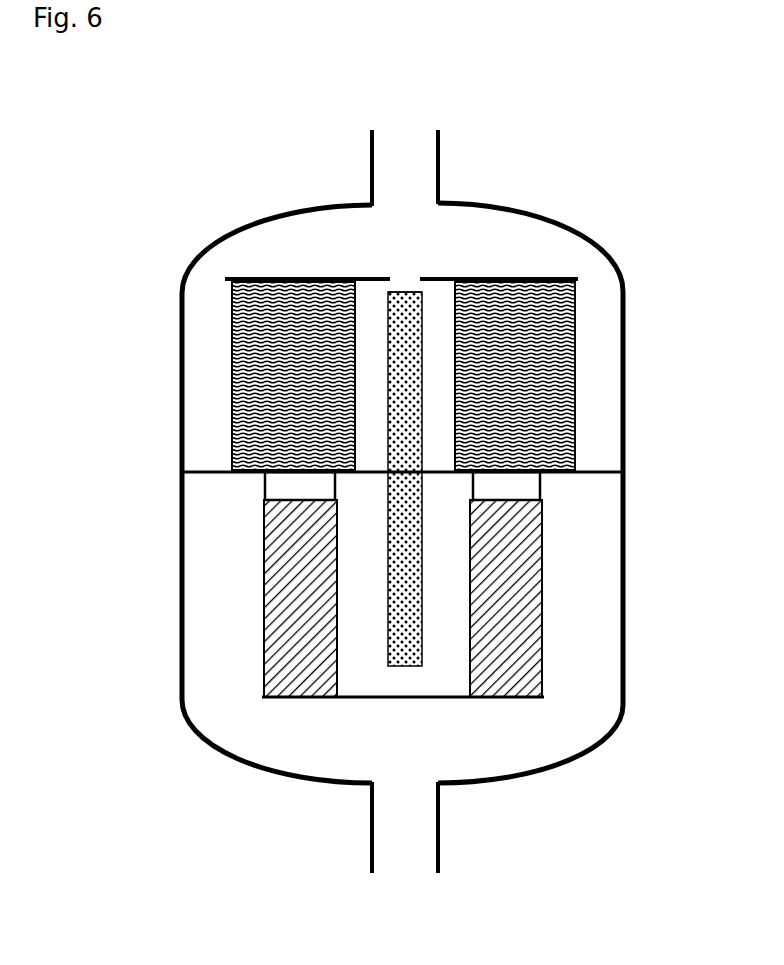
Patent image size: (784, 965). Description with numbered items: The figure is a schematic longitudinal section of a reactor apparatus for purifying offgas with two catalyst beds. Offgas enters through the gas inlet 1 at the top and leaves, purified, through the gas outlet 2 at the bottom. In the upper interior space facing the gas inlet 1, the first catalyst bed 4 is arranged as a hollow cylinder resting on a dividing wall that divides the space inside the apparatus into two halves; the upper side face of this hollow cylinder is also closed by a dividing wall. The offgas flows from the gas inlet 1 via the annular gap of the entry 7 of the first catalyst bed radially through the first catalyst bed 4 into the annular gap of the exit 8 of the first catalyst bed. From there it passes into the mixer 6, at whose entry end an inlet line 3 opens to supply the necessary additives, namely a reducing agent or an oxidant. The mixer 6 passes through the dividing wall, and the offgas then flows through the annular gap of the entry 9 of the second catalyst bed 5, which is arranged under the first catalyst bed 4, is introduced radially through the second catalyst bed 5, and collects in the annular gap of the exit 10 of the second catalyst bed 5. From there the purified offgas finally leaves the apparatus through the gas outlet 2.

The gas inlet 1 is at (405, 140).
The gas outlet 2 is at (405, 854).
The inlet line 3 is at (405, 290).
The first catalyst bed 4 is at (403, 376).
The second catalyst bed 5 is at (403, 598).
The mixer 6 is at (427, 290).
The annular gap of the entry of the first catalyst bed 7 is at (597, 332).
The annular gap of the exit of the first catalyst bed 8 is at (443, 418).
The annular gap of the entry of the second catalyst bed 9 is at (443, 528).
The annular gap of the exit of the second catalyst bed 10 is at (565, 604).